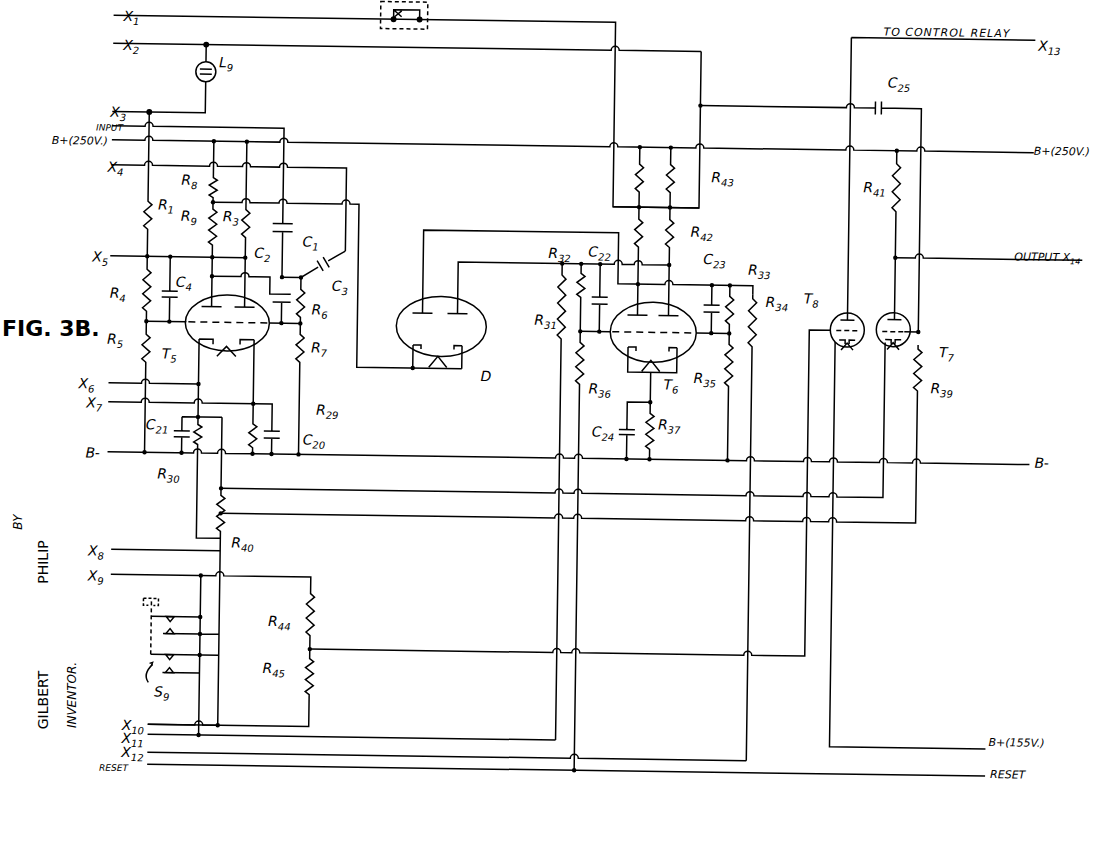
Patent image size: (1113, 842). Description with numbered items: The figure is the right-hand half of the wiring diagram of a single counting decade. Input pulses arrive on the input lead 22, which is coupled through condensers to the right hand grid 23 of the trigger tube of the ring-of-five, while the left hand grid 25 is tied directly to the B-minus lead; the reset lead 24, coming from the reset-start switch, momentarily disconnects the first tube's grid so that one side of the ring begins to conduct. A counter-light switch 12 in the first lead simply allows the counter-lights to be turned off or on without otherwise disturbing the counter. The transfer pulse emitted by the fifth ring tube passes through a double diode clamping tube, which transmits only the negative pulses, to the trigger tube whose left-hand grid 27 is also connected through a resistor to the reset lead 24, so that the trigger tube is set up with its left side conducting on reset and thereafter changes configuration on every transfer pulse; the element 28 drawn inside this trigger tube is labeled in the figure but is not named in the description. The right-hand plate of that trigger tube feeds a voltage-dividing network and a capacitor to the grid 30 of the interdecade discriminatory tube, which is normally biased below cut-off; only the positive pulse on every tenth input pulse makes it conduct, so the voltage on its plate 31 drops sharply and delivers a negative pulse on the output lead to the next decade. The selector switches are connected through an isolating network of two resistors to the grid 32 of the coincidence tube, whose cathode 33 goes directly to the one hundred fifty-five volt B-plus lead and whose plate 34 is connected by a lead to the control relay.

The counter-light switch 12 is at (426, 16).
The input lead 22 is at (280, 130).
The right hand grid 23 is at (243, 340).
The reset lead 24 is at (781, 773).
The left hand grid 25 is at (242, 327).
The left-hand grid of tube T6 27 is at (626, 338).
The cathode of tube T6 28 is at (668, 329).
The grid of interdecade discriminatory tube 30 is at (876, 314).
The plate of interdecade discriminatory tube 31 is at (900, 316).
The grid of coincidence tube 32 is at (856, 315).
The cathode of coincidence tube 33 is at (839, 348).
The plate of coincidence tube 34 is at (840, 313).